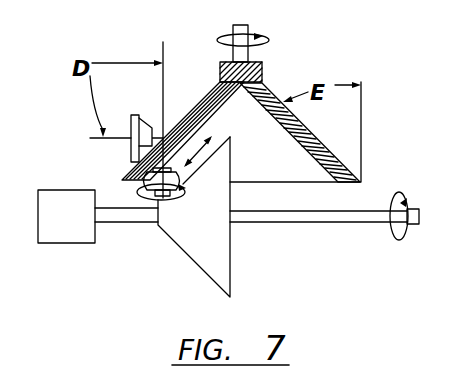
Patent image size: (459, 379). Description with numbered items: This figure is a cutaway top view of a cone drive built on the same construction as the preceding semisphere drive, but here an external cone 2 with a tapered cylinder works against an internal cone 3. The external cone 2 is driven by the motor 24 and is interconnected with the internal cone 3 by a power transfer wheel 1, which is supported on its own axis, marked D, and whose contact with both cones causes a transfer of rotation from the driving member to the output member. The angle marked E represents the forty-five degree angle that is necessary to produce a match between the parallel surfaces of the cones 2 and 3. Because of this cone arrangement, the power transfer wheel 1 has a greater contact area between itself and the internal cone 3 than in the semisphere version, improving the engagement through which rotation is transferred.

The power transfer wheel 1 is at (143, 186).
The external cone 2 is at (209, 254).
The internal cone 3 is at (262, 80).
The motor 24 is at (69, 248).